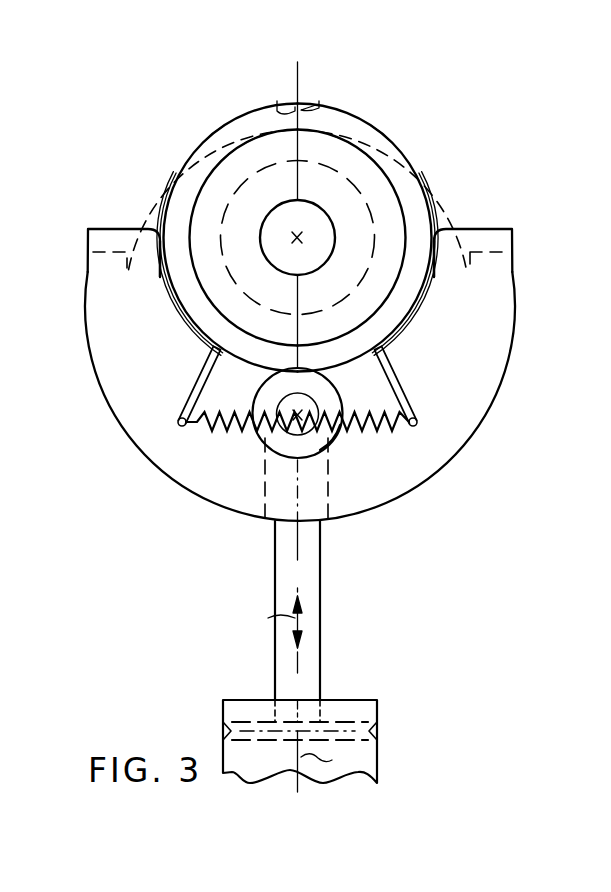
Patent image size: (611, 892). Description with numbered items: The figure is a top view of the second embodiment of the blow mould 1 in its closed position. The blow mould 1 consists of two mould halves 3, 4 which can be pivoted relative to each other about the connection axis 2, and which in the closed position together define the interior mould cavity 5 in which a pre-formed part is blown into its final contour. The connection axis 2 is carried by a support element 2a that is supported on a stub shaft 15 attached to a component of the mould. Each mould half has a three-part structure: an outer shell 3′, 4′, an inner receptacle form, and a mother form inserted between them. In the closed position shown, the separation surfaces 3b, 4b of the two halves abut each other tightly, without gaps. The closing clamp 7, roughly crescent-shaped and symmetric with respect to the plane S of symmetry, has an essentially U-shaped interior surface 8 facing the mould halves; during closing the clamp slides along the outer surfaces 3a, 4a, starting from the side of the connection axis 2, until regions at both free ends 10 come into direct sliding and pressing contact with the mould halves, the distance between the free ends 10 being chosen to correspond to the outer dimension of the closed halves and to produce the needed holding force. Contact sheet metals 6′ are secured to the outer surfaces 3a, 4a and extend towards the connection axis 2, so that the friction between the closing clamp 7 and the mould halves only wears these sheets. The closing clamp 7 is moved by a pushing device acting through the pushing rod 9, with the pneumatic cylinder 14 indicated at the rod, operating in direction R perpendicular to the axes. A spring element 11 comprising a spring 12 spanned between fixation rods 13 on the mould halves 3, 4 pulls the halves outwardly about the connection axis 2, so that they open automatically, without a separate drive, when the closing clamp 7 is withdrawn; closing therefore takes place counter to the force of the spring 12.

The blow mould 1 is at (142, 650).
The connection axis 2 is at (280, 450).
The support element 2a is at (335, 447).
The mould half 3 is at (412, 158).
The outer shell 3′ is at (337, 150).
The outer surface 3a is at (391, 172).
The separation surface 3b is at (316, 100).
The mould half 4 is at (193, 160).
The outer shell 4′ is at (257, 150).
The outer surface 4a is at (203, 172).
The separation surface 4b is at (278, 103).
The interior mould cavity 5 is at (277, 208).
The contact sheet metal 6′ is at (173, 187).
The closing clamp 7 is at (477, 373).
The interior surface 8 is at (149, 288).
The pushing rod 9 is at (313, 555).
The free ends 10 is at (110, 240).
The spring element 11 is at (405, 437).
The spring 12 is at (212, 424).
The fixation rods 13 is at (188, 375).
The pneumatic cylinder 14 is at (358, 706).
The stub shaft 15 is at (160, 232).